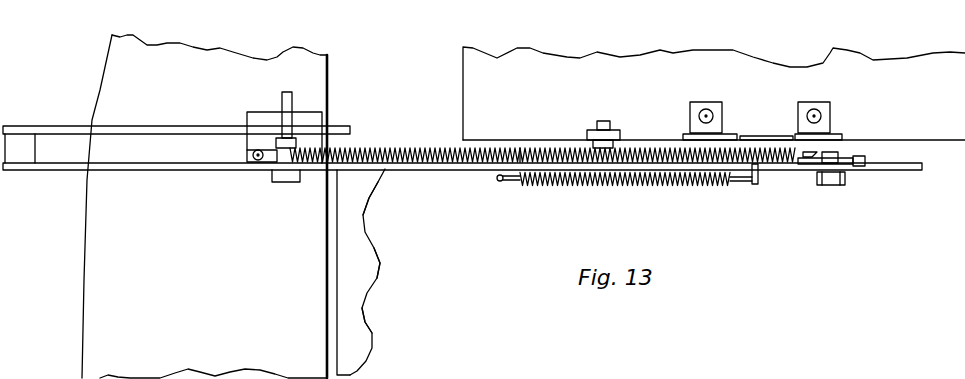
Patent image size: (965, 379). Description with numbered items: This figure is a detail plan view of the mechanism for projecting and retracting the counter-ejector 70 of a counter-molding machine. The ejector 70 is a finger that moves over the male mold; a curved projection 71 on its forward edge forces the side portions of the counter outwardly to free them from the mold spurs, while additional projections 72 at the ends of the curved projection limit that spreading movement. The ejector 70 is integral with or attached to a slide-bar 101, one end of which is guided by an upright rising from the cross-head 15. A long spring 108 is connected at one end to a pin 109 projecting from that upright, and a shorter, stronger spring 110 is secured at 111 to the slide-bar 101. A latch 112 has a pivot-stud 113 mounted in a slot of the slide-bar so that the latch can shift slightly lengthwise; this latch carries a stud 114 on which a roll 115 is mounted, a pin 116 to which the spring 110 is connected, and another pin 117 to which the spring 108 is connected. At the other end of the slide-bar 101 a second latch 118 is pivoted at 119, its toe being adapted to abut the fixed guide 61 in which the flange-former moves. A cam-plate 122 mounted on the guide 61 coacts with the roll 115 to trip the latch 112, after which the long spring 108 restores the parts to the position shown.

The cross-head 15 is at (204, 206).
The guide 61 is at (714, 93).
The counter-ejector 70 is at (345, 237).
The curved projection 71 is at (382, 265).
The additional projections 72 is at (370, 203).
The slide-bar 101 is at (434, 170).
The spring 108 is at (380, 150).
The pin 109 is at (256, 166).
The spring 110 is at (626, 188).
The securing point 111 is at (498, 182).
The latch 112 is at (528, 153).
The pivot-stud 113 is at (832, 182).
The stud 114 is at (610, 123).
The roll 115 is at (618, 133).
The pin 116 is at (756, 184).
The pin 117 is at (803, 171).
The latch 118 is at (123, 130).
The pivot 119 is at (23, 142).
The cam-plate 122 is at (755, 136).